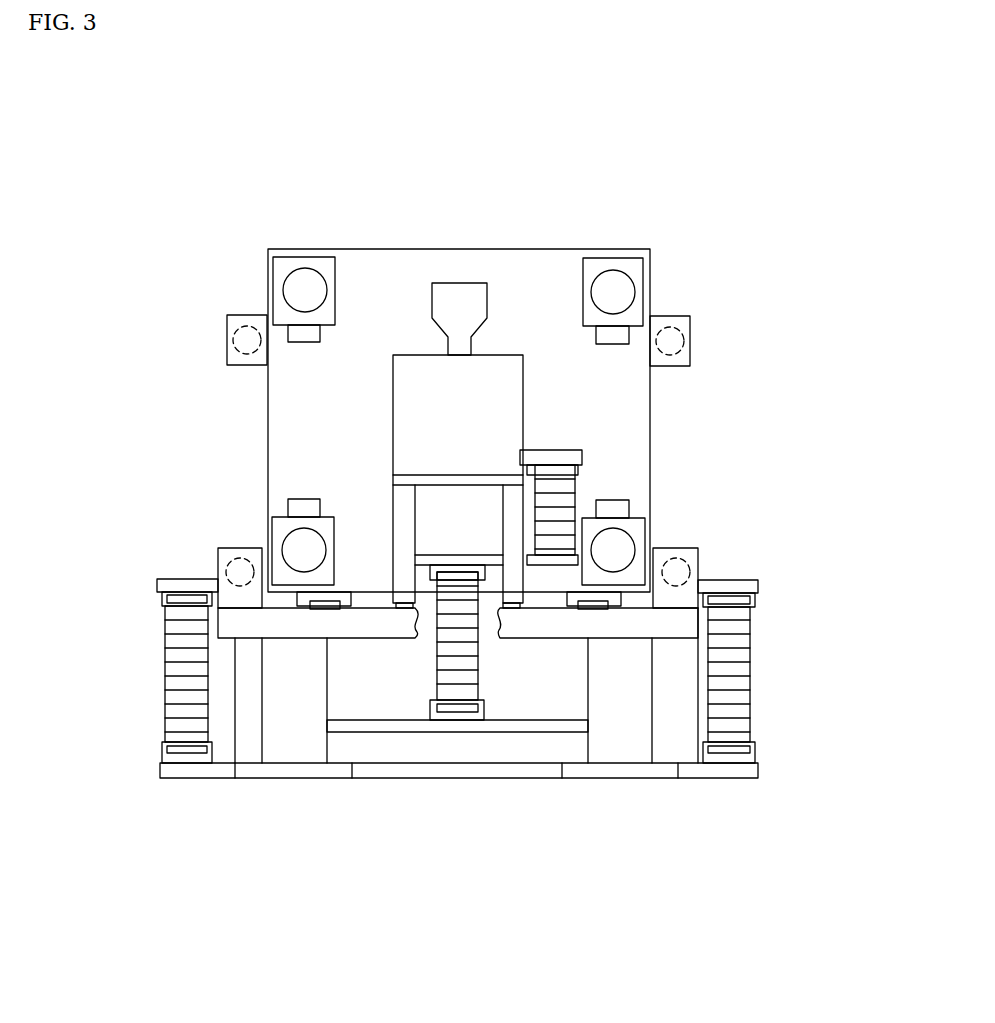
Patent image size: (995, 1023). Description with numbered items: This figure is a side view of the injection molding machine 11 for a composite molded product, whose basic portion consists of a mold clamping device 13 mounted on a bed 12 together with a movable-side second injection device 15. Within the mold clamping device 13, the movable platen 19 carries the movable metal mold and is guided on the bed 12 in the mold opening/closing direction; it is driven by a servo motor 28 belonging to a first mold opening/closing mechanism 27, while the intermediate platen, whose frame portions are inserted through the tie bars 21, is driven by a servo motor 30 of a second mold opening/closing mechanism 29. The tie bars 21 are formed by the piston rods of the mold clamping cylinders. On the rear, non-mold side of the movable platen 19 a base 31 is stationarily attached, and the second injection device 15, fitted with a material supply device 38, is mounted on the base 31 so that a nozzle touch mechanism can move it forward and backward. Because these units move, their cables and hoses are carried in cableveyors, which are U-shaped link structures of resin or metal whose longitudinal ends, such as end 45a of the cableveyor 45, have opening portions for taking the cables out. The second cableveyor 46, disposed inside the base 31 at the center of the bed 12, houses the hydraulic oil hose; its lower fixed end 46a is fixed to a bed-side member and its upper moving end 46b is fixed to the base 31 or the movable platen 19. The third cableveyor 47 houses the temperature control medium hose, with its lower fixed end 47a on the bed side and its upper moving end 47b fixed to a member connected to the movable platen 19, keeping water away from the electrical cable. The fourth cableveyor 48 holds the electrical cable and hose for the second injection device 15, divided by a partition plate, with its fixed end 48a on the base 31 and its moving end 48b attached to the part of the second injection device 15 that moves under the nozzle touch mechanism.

The injection molding machine 11 is at (459, 200).
The bed 12 is at (677, 630).
The mold clamping device 13 is at (672, 205).
The second injection device 15 is at (402, 382).
The movable platen 19 is at (375, 268).
The tie bar 21 is at (303, 277).
The first mold opening/closing mechanism 27 is at (235, 500).
The servo motor 28 is at (232, 572).
The second mold opening/closing mechanism 29 is at (228, 338).
The servo motor 30 is at (180, 342).
The base 31 is at (418, 508).
The material supply device 38 is at (478, 293).
The cableveyor 45 is at (728, 657).
The end of cableveyor 45a is at (740, 752).
The second cableveyor 46 is at (435, 632).
The fixed end 46a is at (457, 714).
The moving end 46b is at (755, 600).
The third cableveyor 47 is at (178, 700).
The fixed end 47a is at (170, 750).
The moving end 47b is at (178, 598).
The fourth cableveyor 48 is at (573, 498).
The fixed end 48a is at (565, 555).
The moving end 48b is at (557, 468).